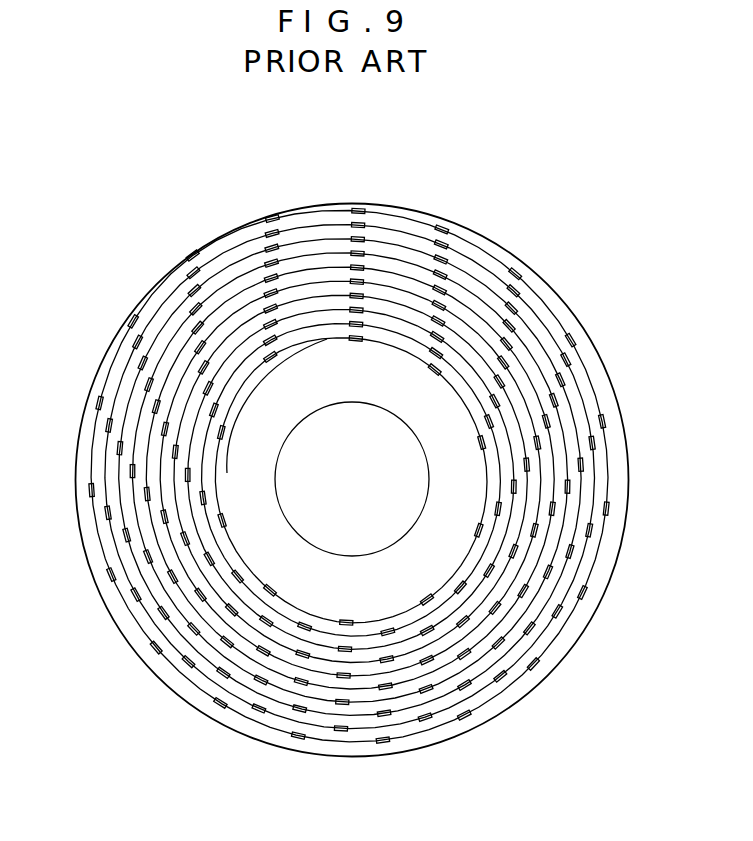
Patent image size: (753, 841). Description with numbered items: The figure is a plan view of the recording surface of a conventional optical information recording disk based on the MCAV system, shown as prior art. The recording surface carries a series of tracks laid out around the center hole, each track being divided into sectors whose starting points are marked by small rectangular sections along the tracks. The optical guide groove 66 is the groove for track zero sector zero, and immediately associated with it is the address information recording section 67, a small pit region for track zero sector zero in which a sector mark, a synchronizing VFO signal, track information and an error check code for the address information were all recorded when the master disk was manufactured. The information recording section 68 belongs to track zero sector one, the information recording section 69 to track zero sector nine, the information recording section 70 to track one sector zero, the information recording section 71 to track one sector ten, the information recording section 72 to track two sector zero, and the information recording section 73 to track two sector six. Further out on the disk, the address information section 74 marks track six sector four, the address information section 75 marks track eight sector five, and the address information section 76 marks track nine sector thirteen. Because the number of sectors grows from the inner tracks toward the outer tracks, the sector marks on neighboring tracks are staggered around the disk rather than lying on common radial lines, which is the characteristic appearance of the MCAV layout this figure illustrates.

The optical guide groove 66 is at (372, 341).
The address information recording section 67 is at (364, 325).
The information recording section 68 is at (438, 371).
The information recording section 69 is at (300, 316).
The information recording section 70 is at (366, 310).
The information recording section 71 is at (280, 332).
The information recording section 72 is at (367, 297).
The information recording section 73 is at (343, 652).
The address information section 74 is at (597, 446).
The address information section 75 is at (595, 531).
The address information section 76 is at (110, 580).